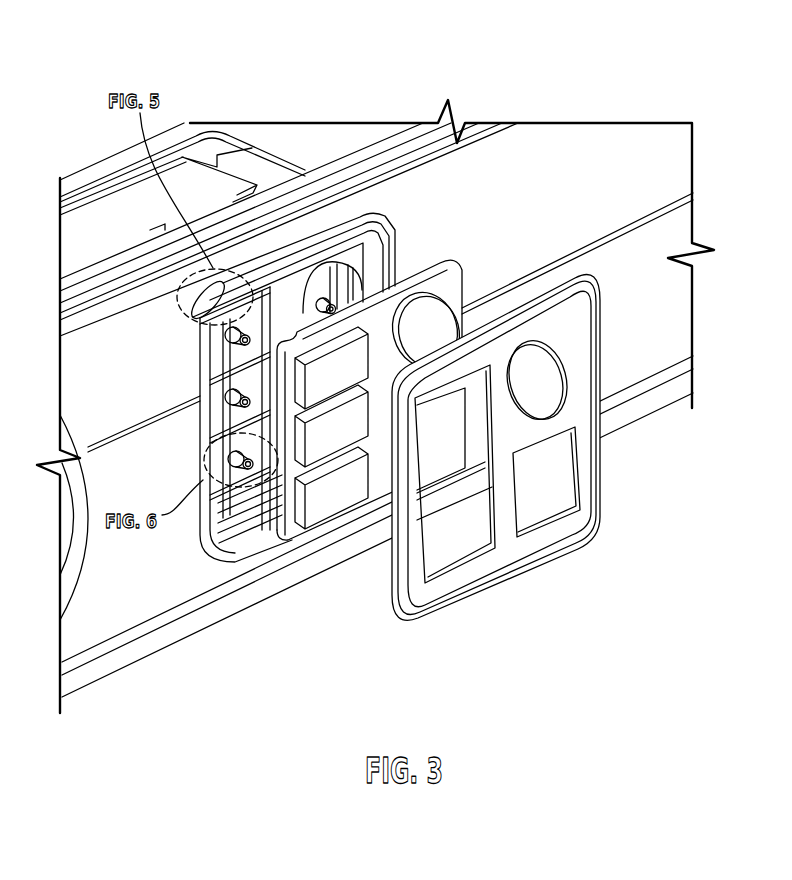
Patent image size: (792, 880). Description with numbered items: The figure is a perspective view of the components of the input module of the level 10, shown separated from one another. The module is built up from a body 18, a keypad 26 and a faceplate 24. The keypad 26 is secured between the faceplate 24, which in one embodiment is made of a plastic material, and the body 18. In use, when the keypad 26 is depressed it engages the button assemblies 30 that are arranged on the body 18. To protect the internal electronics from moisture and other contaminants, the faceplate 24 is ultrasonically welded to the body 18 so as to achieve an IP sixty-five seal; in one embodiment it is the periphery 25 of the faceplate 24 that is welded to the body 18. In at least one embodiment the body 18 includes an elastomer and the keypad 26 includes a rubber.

The chassis 10 is at (722, 256).
The body 18 is at (268, 534).
The faceplate 24 is at (603, 553).
The periphery 25 is at (613, 453).
The keypad 26 is at (347, 500).
The button assemblies 30 is at (210, 390).